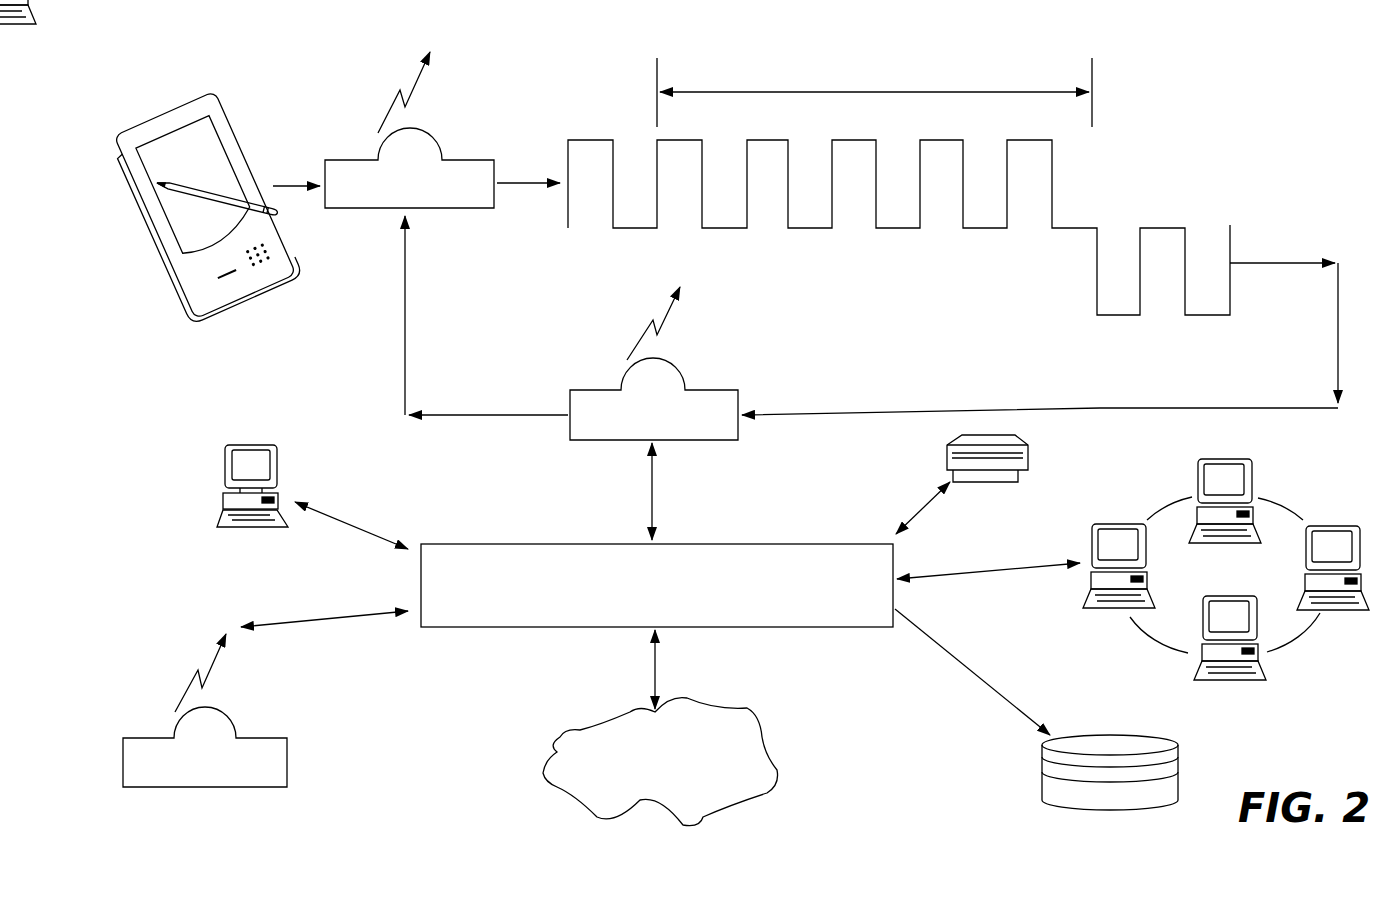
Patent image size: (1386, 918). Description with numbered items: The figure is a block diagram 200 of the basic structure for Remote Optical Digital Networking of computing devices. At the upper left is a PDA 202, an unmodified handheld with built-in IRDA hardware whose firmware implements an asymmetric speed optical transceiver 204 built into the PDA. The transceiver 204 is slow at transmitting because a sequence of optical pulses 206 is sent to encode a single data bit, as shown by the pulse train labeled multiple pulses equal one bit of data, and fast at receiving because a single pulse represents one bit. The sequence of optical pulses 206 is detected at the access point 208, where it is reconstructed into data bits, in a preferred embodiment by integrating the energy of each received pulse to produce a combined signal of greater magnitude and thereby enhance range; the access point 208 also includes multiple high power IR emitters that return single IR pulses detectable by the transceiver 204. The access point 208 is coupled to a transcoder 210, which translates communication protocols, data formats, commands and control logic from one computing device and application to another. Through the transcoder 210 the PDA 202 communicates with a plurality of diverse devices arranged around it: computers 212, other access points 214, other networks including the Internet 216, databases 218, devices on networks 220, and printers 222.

The block diagram 200 is at (1370, 766).
The PDA 202 is at (178, 122).
The optical transceiver 204 is at (443, 208).
The sequence of optical pulses 206 is at (812, 228).
The access point 208 is at (700, 440).
The transcoder 210 is at (542, 543).
The computers 212 is at (222, 472).
The other access points 214 is at (237, 787).
The other networks including the Internet 216 is at (705, 817).
The databases 218 is at (1102, 807).
The devices on networks 220 is at (684, 340).
The printers 222 is at (993, 482).